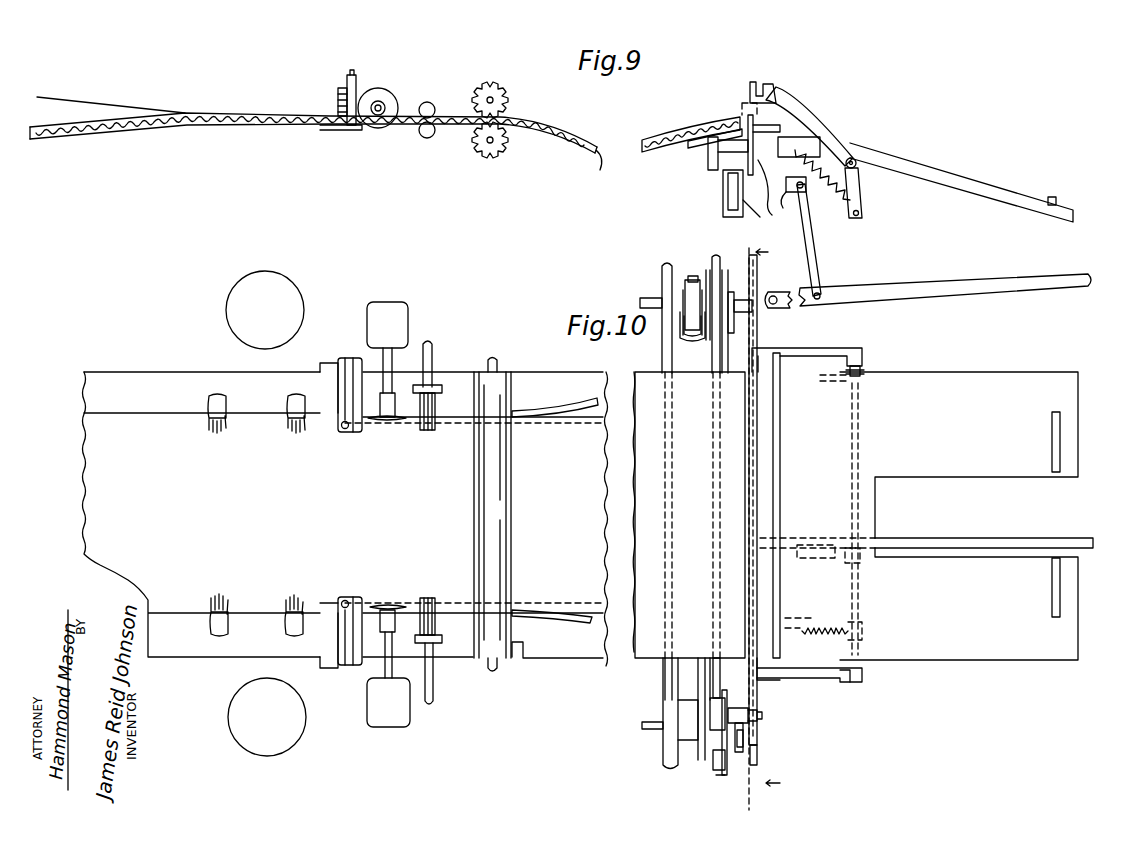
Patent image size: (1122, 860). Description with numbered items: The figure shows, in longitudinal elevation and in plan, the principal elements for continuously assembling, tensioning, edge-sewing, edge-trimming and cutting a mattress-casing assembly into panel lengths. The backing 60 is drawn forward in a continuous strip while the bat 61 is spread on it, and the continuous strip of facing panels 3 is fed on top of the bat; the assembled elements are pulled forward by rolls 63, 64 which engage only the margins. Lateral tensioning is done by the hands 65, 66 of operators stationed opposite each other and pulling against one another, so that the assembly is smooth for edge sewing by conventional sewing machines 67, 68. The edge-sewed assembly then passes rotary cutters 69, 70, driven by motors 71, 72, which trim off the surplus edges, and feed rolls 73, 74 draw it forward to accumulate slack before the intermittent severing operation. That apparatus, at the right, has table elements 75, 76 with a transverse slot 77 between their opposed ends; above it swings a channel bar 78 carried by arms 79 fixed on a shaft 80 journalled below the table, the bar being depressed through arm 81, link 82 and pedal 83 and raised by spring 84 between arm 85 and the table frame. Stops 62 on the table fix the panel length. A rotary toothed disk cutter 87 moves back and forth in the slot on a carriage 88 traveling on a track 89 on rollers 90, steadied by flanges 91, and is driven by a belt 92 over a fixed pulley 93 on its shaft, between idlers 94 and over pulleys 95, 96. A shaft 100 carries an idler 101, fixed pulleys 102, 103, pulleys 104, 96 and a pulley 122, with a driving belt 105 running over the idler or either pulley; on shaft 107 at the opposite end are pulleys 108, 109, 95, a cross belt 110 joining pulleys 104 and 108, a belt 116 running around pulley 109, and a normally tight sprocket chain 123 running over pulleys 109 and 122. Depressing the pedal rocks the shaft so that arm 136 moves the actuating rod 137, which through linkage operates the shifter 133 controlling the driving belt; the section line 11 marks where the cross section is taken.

In FIG. 9, the facing panel 3 is at (116, 106).
In FIG. 10, the facing panel 3 is at (345, 513).
In FIG. 9, the section line 11 is at (761, 518).
In FIG. 9, the backing 60 is at (80, 136).
In FIG. 9, the bat 61 is at (84, 123).
In FIG. 9, the stop 62 is at (1058, 201).
In FIG. 10, the stop 62 is at (1054, 420).
In FIG. 9, the roll 63 is at (432, 105).
In FIG. 10, the roll 63 is at (438, 411).
In FIG. 9, the roll 64 is at (427, 139).
In FIG. 10, the hands 65 is at (286, 422).
In FIG. 10, the hands 66 is at (290, 604).
In FIG. 10, the sewing machine 67 is at (347, 430).
In FIG. 9, the sewing machine 68 is at (356, 82).
In FIG. 10, the sewing machine 68 is at (345, 598).
In FIG. 10, the rotary cutter 69 is at (389, 423).
In FIG. 9, the rotary cutter 70 is at (384, 98).
In FIG. 10, the rotary cutter 70 is at (390, 603).
In FIG. 10, the motor 71 is at (387, 359).
In FIG. 10, the motor 72 is at (388, 668).
In FIG. 9, the feed roll 73 is at (506, 98).
In FIG. 10, the feed roll 73 is at (513, 397).
In FIG. 9, the feed roll 74 is at (498, 158).
In FIG. 9, the table element 75 is at (694, 143).
In FIG. 9, the table element 76 is at (868, 150).
In FIG. 10, the table element 76 is at (959, 516).
In FIG. 9, the transverse slot 77 is at (754, 140).
In FIG. 10, the transverse slot 77 is at (748, 420).
In FIG. 9, the channel bar 78 is at (750, 85).
In FIG. 10, the channel bar 78 is at (770, 352).
In FIG. 9, the arm 79 is at (808, 120).
In FIG. 10, the arm 79 is at (825, 348).
In FIG. 9, the shaft 80 is at (858, 168).
In FIG. 10, the shaft 80 is at (862, 675).
In FIG. 9, the arm 81 is at (795, 172).
In FIG. 10, the arm 81 is at (845, 560).
In FIG. 9, the link 82 is at (815, 245).
In FIG. 10, the link 82 is at (815, 545).
In FIG. 9, the pedal 83 is at (962, 285).
In FIG. 10, the pedal 83 is at (1006, 540).
In FIG. 9, the spring 84 is at (838, 196).
In FIG. 10, the spring 84 is at (826, 628).
In FIG. 9, the arm 85 is at (863, 206).
In FIG. 9, the disk cutter 87 is at (751, 172).
In FIG. 10, the disk cutter 87 is at (758, 740).
In FIG. 9, the carriage 88 is at (720, 180).
In FIG. 10, the carriage 88 is at (738, 753).
In FIG. 9, the track 89 is at (730, 202).
In FIG. 10, the track 89 is at (745, 745).
In FIG. 9, the roller 90 is at (773, 192).
In FIG. 9, the flange 91 is at (752, 213).
In FIG. 10, the belt 92 is at (718, 778).
In FIG. 10, the fixed pulley 93 is at (752, 712).
In FIG. 10, the idler 94 is at (718, 700).
In FIG. 10, the pulley 95 is at (725, 777).
In FIG. 10, the pulley 96 is at (723, 286).
In FIG. 10, the shaft 100 is at (647, 299).
In FIG. 10, the idler 101 is at (686, 282).
In FIG. 10, the fixed pulley 102 is at (683, 292).
In FIG. 10, the fixed pulley 103 is at (708, 268).
In FIG. 10, the fixed pulley 104 is at (662, 342).
In FIG. 10, the driving belt 105 is at (692, 275).
In FIG. 10, the shaft 107 is at (652, 723).
In FIG. 10, the fixed pulley 108 is at (665, 742).
In FIG. 10, the fixed pulley 109 is at (668, 768).
In FIG. 10, the cross belt 110 is at (668, 672).
In FIG. 10, the belt 116 is at (700, 690).
In FIG. 10, the pulley 122 is at (736, 298).
In FIG. 10, the sprocket chain 123 is at (718, 660).
In FIG. 10, the shifter 133 is at (691, 338).
In FIG. 10, the arm 136 is at (864, 372).
In FIG. 10, the actuating rod 137 is at (834, 380).